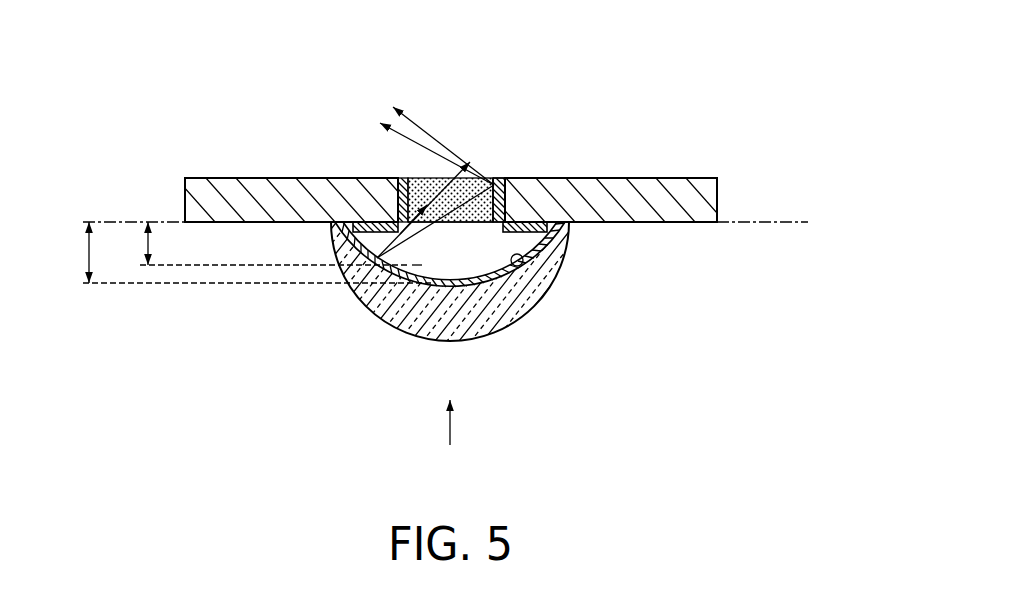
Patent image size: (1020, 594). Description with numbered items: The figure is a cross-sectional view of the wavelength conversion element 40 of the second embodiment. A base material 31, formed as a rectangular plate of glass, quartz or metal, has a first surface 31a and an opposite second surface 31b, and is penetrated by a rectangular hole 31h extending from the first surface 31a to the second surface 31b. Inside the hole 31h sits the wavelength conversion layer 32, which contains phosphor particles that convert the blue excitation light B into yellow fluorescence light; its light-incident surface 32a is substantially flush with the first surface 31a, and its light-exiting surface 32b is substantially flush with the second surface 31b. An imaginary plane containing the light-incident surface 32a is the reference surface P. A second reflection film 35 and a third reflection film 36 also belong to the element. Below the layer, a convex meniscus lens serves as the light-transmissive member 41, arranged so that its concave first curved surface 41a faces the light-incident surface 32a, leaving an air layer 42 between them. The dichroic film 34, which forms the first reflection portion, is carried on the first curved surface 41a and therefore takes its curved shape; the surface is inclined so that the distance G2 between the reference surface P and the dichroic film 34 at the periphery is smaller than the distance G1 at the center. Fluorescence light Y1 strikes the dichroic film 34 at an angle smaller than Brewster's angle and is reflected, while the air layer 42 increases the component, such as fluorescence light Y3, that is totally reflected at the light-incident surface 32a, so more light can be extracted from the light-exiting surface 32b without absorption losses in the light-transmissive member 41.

The base material 31 is at (610, 190).
The first surface 31a is at (685, 223).
The second surface 31b is at (675, 179).
The hole 31h is at (467, 83).
The wavelength conversion layer 32 is at (434, 194).
The light-incident surface 32a is at (480, 224).
The light-exiting surface 32b is at (492, 180).
The dichroic film 34 is at (553, 253).
The second reflection film 35 is at (502, 183).
The third reflection film 36 is at (362, 223).
The wavelength conversion element 40 is at (322, 102).
The light-transmissive member 41 is at (452, 328).
The first curved surface 41a is at (528, 266).
The air layer 42 is at (417, 264).
The fluorescence light Y1 is at (396, 233).
The fluorescence light Y3 is at (494, 185).
The reference surface P is at (767, 222).
The blue excitation light B is at (452, 427).
The distance G1 is at (245, 252).
The distance G2 is at (261, 243).